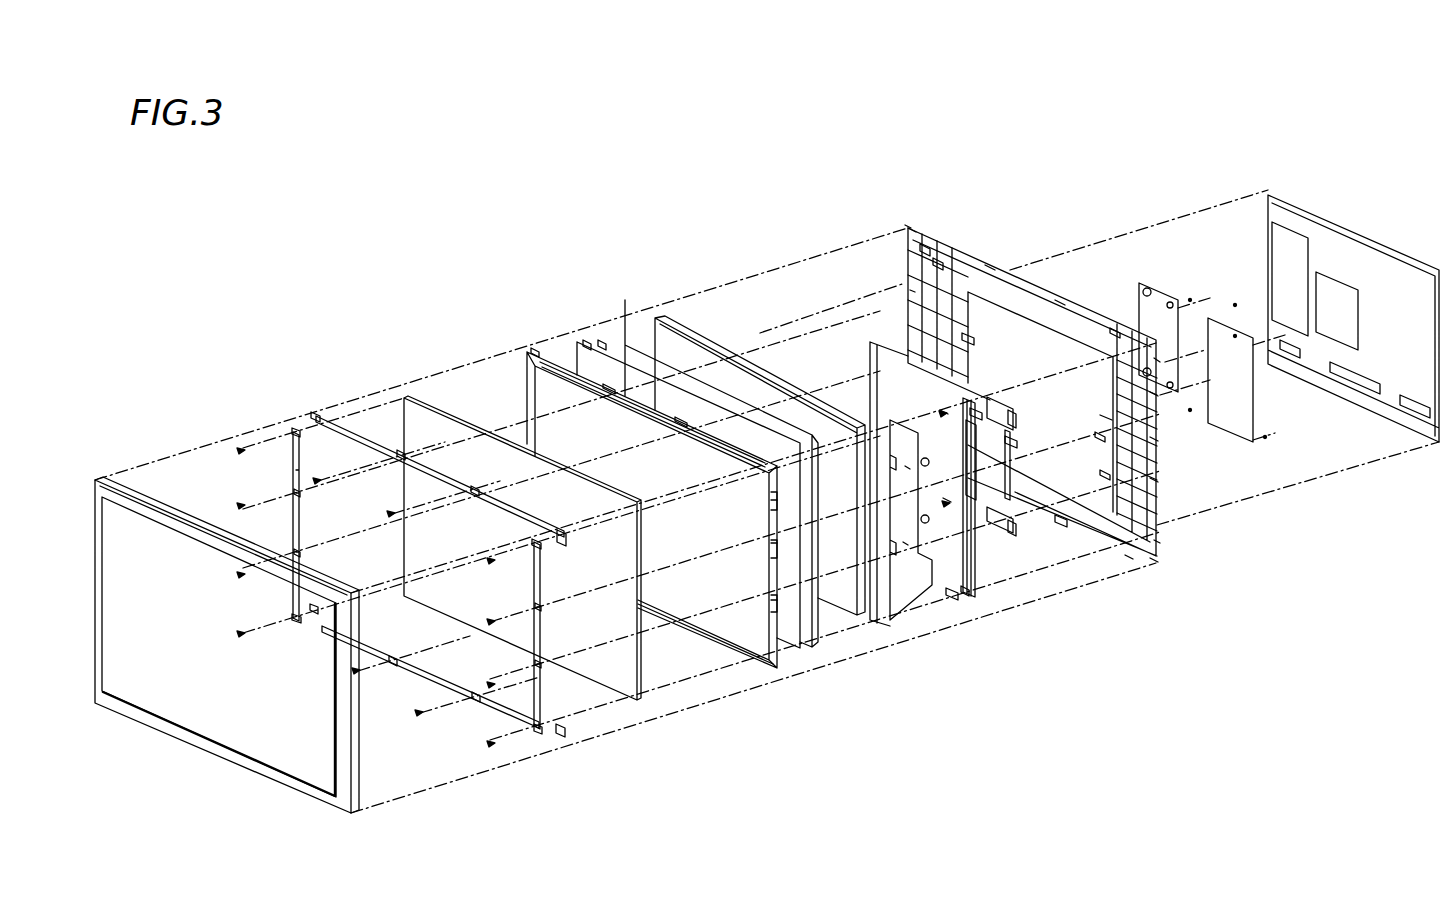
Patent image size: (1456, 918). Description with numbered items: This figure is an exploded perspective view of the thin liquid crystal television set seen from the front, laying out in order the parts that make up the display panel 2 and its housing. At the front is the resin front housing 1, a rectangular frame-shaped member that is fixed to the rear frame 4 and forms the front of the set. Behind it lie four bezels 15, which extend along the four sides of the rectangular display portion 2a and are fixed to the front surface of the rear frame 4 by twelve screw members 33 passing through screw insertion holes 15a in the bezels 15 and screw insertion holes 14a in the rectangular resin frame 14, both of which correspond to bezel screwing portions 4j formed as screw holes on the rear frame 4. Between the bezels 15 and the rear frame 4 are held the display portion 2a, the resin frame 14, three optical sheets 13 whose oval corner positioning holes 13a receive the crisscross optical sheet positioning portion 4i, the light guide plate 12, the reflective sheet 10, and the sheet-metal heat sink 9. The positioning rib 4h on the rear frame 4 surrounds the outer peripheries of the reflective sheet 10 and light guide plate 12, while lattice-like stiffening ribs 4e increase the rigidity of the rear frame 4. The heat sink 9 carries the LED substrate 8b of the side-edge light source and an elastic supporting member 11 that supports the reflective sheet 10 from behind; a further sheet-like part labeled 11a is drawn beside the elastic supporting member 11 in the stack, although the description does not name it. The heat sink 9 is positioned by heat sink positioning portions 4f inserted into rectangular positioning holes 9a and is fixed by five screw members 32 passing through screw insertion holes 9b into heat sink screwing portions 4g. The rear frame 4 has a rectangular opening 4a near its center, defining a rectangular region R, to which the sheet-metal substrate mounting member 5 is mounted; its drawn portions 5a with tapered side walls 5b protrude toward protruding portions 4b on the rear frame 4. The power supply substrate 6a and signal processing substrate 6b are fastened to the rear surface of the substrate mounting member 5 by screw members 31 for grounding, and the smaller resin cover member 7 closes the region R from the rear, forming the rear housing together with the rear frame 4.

The front housing 1 is at (93, 478).
The display panel 2 is at (480, 299).
The display portion 2a is at (416, 418).
The elastic supporting member 11 is at (626, 300).
The reflection sheet 11a is at (690, 337).
The light guide plate 12 is at (592, 340).
The optical sheets 13 is at (583, 343).
The positioning holes 13a is at (535, 350).
The resin frame 14 is at (528, 378).
The screw insertion holes 14a is at (540, 392).
The bezels 15 is at (291, 493).
The screw insertion holes 15a is at (309, 432).
The screw members 33 is at (244, 449).
The rear frame 4 is at (975, 258).
The opening 4a is at (1155, 440).
The protruding portions 4b is at (968, 340).
The stiffening ribs 4e is at (925, 248).
The heat sink positioning portions 4f is at (1115, 330).
The heat sink screwing portions 4g is at (1108, 420).
The positioning rib 4h is at (910, 292).
The optical sheet positioning portion 4i is at (908, 228).
The bezel screwing portions 4j is at (905, 232).
The substrate mounting member 5 is at (870, 345).
The drawn portions 5a is at (995, 398).
The side wall 5b is at (1012, 415).
The power supply substrate 6a is at (1210, 320).
The signal processing substrate 6b is at (1147, 285).
The cover member 7 is at (1360, 235).
The LED substrate 8b is at (978, 592).
The heat sink 9 is at (905, 595).
The positioning holes 9a is at (975, 416).
The screw insertion holes 9b is at (926, 461).
The reflective sheet 10 is at (962, 597).
The screw members 31 is at (1160, 272).
The screw members 32 is at (946, 413).
The rectangular region R is at (1130, 560).